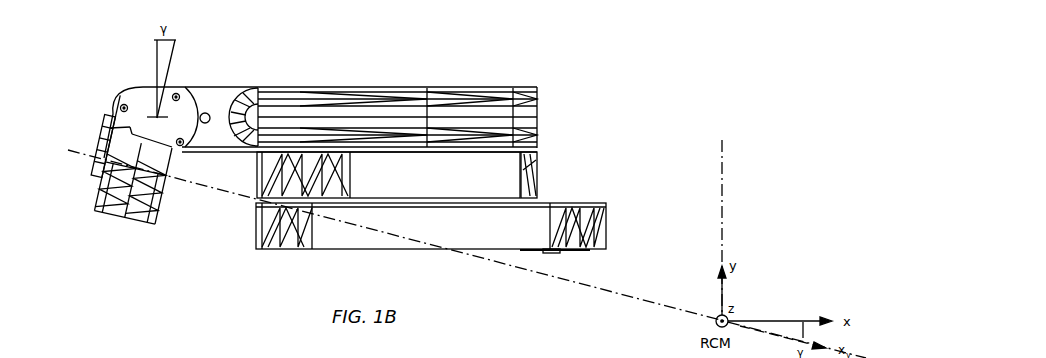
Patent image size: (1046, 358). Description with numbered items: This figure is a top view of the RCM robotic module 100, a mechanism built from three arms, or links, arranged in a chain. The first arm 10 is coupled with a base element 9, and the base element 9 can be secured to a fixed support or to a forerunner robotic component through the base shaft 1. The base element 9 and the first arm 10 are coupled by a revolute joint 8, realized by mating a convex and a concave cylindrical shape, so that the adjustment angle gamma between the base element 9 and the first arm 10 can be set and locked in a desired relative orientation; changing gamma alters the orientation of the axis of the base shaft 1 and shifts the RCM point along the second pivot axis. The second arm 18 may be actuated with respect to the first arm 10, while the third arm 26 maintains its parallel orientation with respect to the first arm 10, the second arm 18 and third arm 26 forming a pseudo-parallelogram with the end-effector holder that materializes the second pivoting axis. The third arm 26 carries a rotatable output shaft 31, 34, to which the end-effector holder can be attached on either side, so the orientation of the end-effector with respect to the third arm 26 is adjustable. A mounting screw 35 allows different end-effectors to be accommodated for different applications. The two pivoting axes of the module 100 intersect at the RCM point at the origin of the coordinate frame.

The base shaft 1 is at (97, 145).
The joint 8 is at (193, 97).
The base element 9 is at (137, 98).
The first arm 10 is at (322, 93).
The second arm 18 is at (534, 162).
The third arm 26 is at (336, 232).
The output shaft 31 is at (581, 356).
The output shaft 34 is at (565, 202).
The mounting screw 35 is at (554, 254).
The module 100 is at (575, 71).